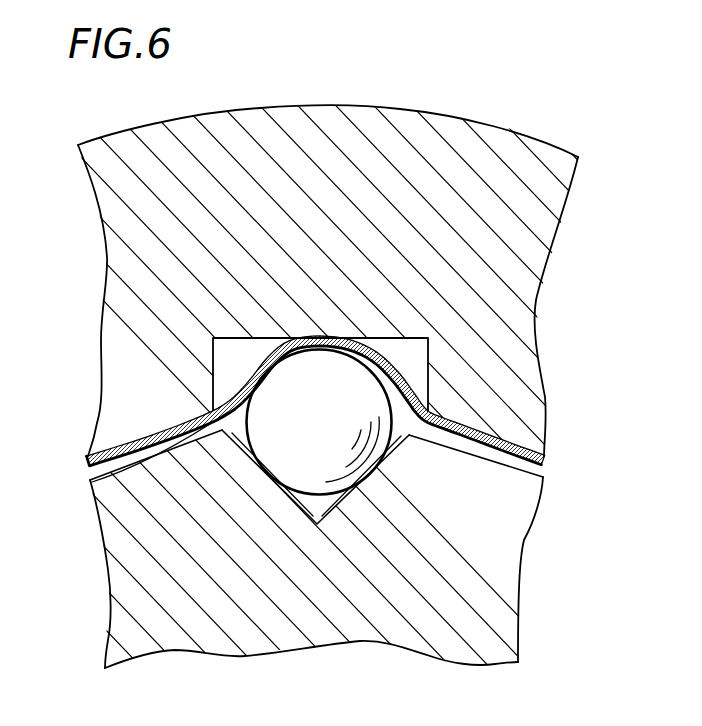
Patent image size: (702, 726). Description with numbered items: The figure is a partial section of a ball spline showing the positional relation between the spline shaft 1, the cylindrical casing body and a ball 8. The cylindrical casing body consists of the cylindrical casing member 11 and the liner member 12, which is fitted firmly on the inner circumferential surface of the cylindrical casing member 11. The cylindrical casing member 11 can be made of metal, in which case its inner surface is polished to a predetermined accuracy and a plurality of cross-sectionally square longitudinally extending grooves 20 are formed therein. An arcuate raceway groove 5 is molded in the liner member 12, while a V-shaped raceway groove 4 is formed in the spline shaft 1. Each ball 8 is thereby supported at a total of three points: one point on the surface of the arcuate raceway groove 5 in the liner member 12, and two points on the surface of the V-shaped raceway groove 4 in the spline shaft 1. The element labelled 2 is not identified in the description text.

The spline shaft 1 is at (477, 588).
The upper housing part 2 is at (351, 261).
The V-shaped raceway groove 4 is at (292, 482).
The arcuate raceway groove 5 is at (92, 481).
The ball 8 is at (308, 422).
The cylindrical casing member 11 is at (128, 307).
The liner member 12 is at (390, 362).
The longitudinally extending groove 20 is at (318, 401).